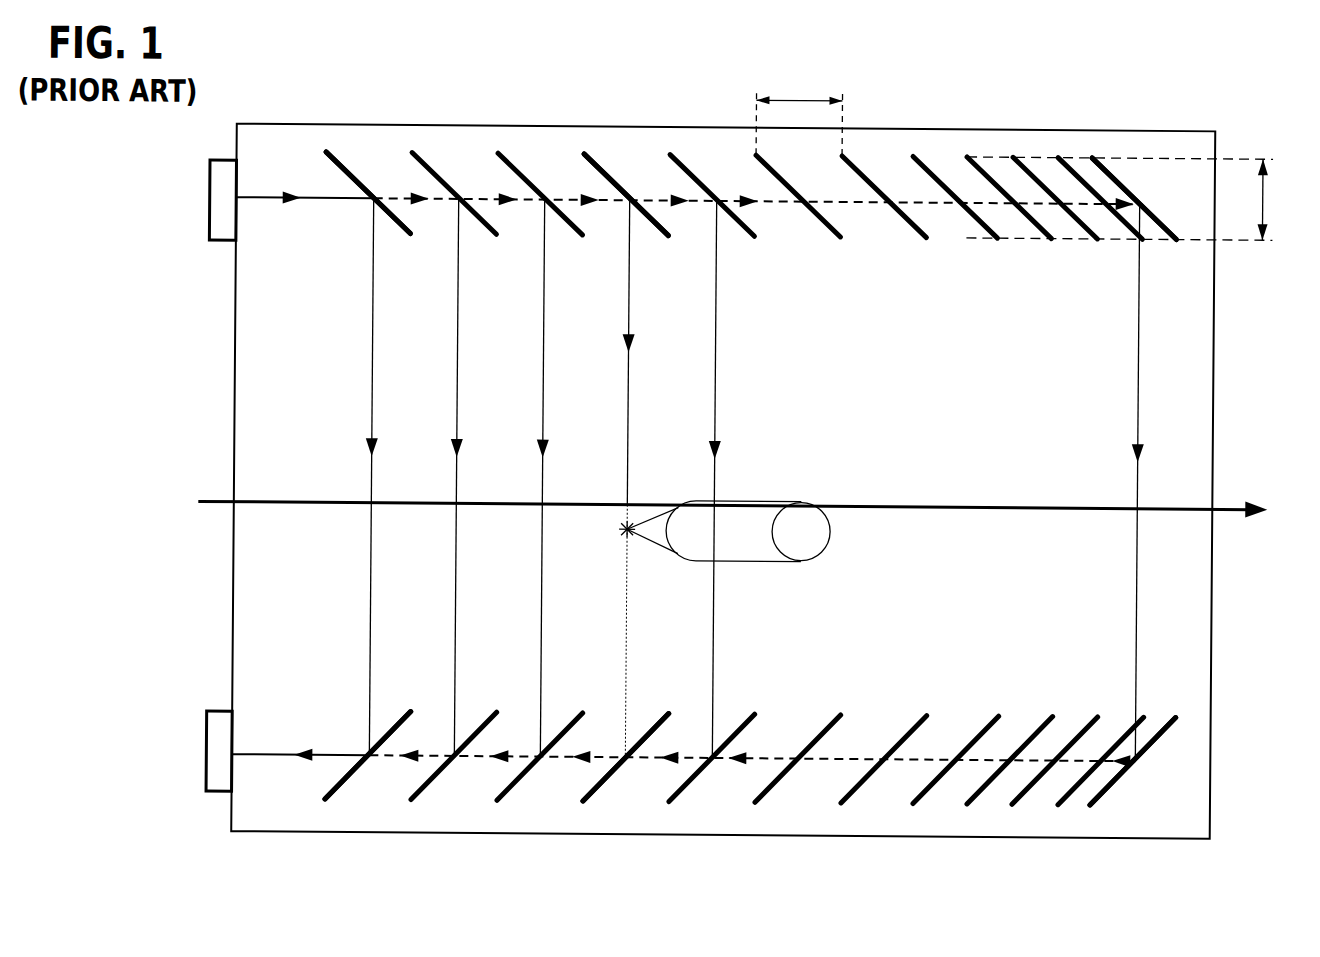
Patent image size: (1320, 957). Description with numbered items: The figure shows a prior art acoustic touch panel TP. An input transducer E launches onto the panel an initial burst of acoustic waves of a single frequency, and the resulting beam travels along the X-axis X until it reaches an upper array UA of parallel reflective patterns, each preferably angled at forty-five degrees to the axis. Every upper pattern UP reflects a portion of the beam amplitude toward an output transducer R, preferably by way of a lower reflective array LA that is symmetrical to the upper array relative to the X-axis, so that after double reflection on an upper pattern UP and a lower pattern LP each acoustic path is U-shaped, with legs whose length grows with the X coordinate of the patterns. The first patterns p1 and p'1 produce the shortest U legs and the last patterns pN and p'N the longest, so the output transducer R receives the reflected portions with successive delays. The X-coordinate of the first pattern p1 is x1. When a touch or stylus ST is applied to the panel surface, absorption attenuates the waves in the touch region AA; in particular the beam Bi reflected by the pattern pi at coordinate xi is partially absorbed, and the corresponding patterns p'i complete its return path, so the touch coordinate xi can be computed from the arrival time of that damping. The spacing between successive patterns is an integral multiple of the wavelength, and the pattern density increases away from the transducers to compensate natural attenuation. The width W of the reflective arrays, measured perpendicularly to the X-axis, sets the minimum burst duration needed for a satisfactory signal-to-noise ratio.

The touch panel TP is at (1190, 340).
The input transducer E is at (207, 204).
The output transducer R is at (208, 761).
The pattern of the upper reflective array UP is at (437, 174).
The first pattern p1 is at (342, 170).
The pattern pi is at (606, 170).
The last pattern pN is at (1113, 174).
The upper array UA is at (878, 138).
The width of the reflective arrays W is at (1263, 188).
The X-coordinate of the first pattern x1 is at (371, 504).
The coordinate xi is at (627, 504).
The beam Bi is at (630, 358).
The X-axis X is at (1226, 504).
The stylus ST is at (765, 500).
The region of the touch AA is at (622, 531).
The pattern of the lower reflective array LP is at (436, 785).
The first pattern of the lower array p'1 is at (367, 802).
The pattern p'i is at (625, 804).
The last pattern of the lower array p'N is at (1132, 806).
The lower reflective array LA is at (809, 818).